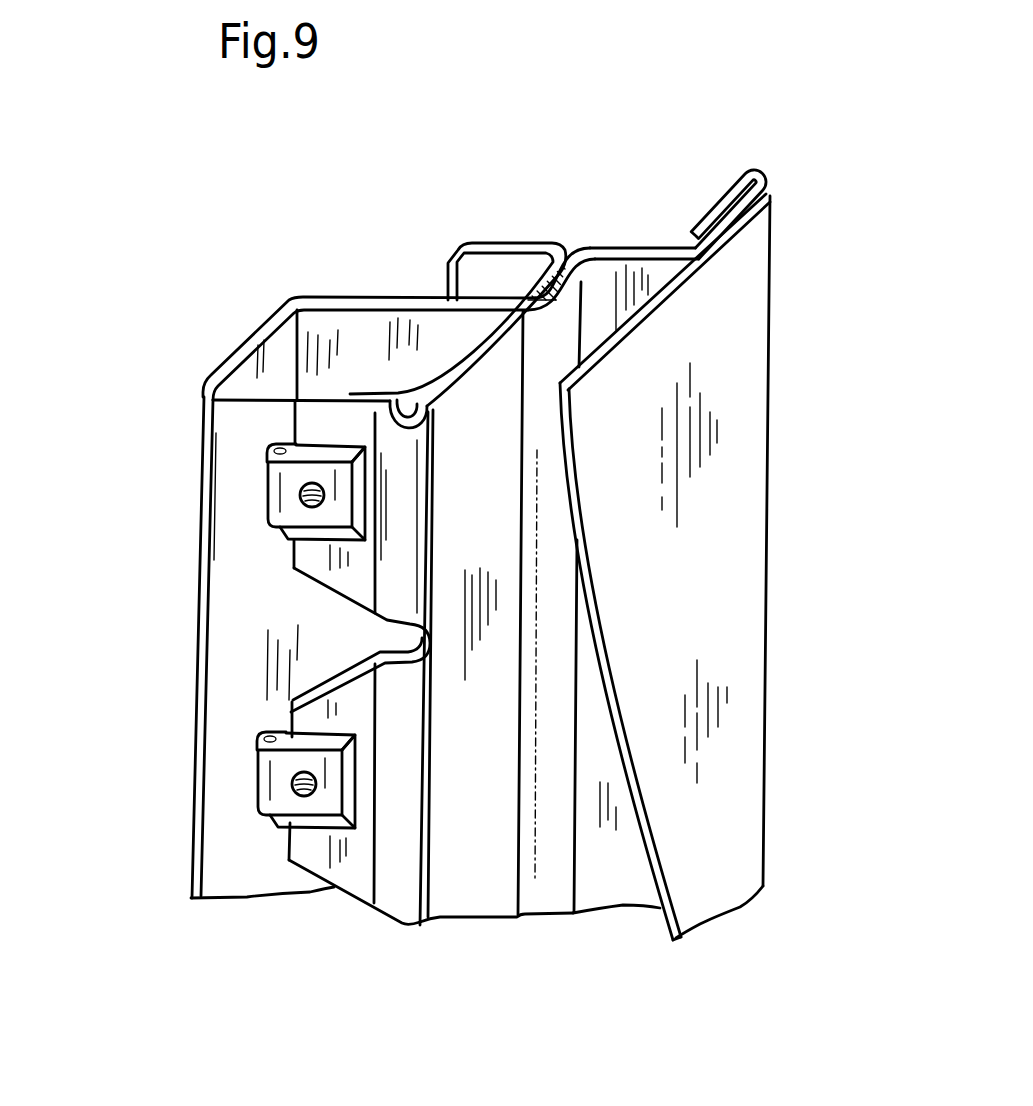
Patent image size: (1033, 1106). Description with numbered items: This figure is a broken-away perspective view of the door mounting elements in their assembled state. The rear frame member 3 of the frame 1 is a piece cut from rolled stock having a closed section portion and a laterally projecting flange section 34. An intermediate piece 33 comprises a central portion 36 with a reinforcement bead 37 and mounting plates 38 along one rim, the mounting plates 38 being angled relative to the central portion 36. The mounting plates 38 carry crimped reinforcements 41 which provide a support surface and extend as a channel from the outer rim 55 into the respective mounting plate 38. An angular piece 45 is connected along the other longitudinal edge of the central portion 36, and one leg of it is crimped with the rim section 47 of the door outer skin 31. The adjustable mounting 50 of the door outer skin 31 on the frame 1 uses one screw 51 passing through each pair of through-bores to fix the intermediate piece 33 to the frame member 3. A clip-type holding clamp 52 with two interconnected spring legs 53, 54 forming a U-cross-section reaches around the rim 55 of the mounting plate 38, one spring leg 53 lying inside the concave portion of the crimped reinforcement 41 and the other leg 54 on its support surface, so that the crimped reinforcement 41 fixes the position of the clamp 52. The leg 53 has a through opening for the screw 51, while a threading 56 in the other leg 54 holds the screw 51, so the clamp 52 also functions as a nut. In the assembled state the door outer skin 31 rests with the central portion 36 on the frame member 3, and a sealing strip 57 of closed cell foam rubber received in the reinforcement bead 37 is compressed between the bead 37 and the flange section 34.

The frame 1 is at (420, 572).
The rear frame member 3 is at (213, 838).
The door outer skin 31 is at (718, 380).
The intermediate piece 33 is at (621, 914).
The flange section 34 is at (533, 267).
The central portion 36 is at (482, 392).
The reinforcement bead 37 is at (548, 887).
The mounting plates 38 is at (350, 575).
The crimped reinforcements 41 is at (316, 452).
The angular piece 45 is at (633, 277).
The rim section 47 is at (717, 205).
The adjustable mounting 50 is at (285, 629).
The screw 51 is at (301, 797).
The clip-type holding clamp 52 is at (279, 513).
The spring leg 53 is at (278, 443).
The spring leg 54 is at (327, 515).
The outer rim 55 is at (290, 554).
The threading 56 is at (327, 497).
The sealing strip 57 is at (553, 250).